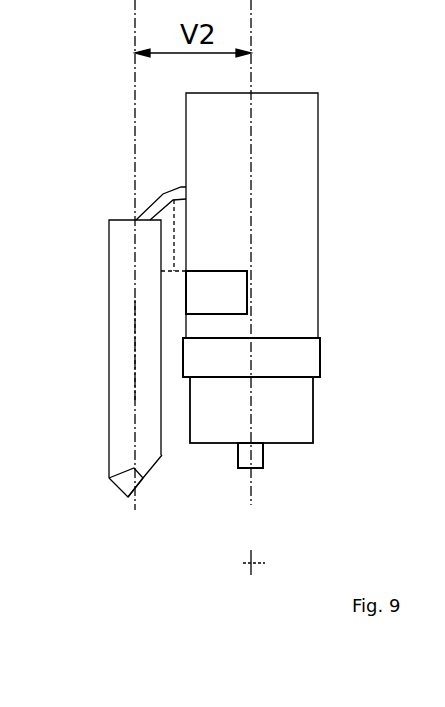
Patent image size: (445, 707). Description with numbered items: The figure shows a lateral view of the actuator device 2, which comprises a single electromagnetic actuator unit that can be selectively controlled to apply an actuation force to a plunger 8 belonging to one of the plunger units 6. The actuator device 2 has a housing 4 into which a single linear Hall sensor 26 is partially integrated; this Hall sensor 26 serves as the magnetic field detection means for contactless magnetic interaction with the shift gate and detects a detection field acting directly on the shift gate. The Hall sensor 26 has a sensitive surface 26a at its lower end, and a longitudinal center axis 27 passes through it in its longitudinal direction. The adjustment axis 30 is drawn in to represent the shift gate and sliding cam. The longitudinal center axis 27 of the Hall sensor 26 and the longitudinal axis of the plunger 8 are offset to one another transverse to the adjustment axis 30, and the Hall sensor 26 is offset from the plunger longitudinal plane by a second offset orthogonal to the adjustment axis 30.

The actuator device 2 is at (285, 227).
The housing 4 is at (318, 93).
The plunger unit 6 is at (291, 473).
The plunger 8 is at (265, 465).
The Hall sensor 26 is at (109, 450).
The sensitive surface 26a is at (143, 475).
The longitudinal center axis 27 is at (135, 381).
The adjustment axis 30 is at (250, 563).